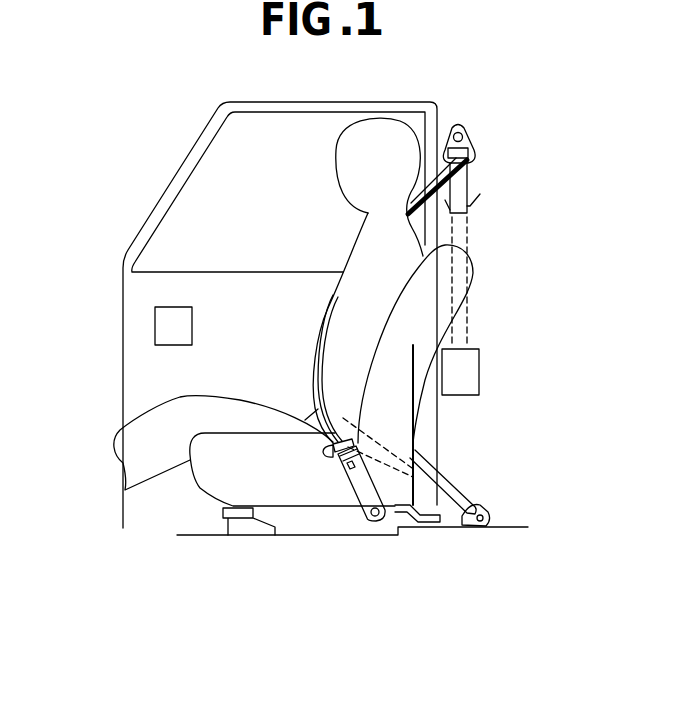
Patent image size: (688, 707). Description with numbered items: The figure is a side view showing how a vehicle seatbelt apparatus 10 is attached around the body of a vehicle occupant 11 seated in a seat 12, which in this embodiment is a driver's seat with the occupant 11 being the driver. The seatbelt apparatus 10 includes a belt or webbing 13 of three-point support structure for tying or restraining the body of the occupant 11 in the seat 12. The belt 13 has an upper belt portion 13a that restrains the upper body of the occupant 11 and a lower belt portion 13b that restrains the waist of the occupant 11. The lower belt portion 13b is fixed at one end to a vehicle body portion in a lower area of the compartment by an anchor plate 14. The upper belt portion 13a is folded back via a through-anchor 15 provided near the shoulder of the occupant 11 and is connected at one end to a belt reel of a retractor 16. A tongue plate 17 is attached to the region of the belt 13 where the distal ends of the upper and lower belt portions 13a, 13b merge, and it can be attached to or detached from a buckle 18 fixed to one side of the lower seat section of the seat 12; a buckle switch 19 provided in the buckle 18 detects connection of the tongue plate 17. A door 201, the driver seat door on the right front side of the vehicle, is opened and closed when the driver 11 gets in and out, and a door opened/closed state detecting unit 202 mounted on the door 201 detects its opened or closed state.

The seatbelt apparatus 10 is at (493, 358).
The vehicle occupant 11 is at (365, 266).
The seat 12 is at (403, 401).
The belt 13 is at (311, 373).
The upper belt portion 13a is at (458, 195).
The lower belt portion 13b is at (440, 481).
The anchor plate 14 is at (490, 509).
The through-anchor 15 is at (472, 150).
The retractor 16 is at (470, 360).
The tongue plate 17 is at (333, 455).
The buckle 18 is at (383, 467).
The buckle switch 19 is at (328, 460).
The door 201 is at (183, 168).
The door opened/closed state detecting unit 202 is at (167, 327).